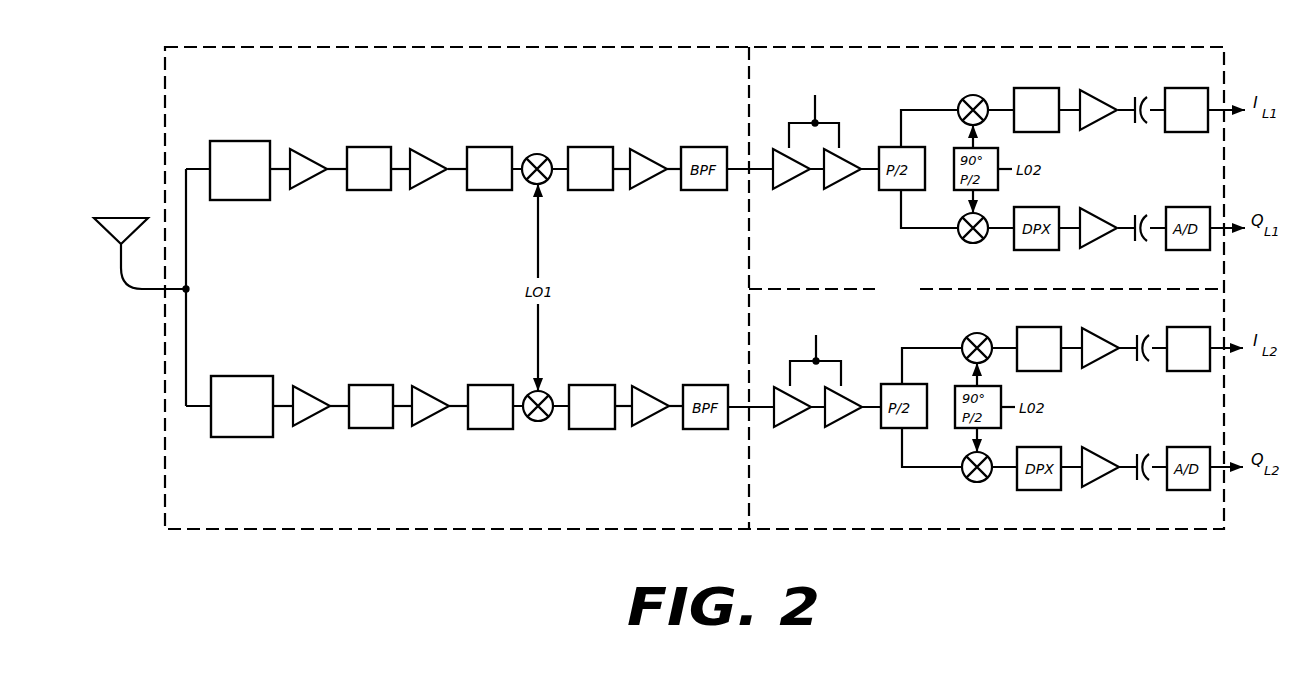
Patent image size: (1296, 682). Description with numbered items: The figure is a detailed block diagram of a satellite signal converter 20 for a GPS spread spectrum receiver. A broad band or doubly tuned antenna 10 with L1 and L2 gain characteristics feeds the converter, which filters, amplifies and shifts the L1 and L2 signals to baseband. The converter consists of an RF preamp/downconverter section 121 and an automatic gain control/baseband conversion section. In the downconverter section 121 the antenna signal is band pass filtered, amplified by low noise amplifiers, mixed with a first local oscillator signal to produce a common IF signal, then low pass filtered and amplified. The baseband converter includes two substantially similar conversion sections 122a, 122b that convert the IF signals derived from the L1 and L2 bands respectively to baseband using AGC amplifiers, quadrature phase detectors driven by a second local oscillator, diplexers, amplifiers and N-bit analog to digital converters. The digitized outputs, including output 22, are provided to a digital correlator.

The satellite signal converter 20 is at (663, 42).
The antenna 10 is at (112, 238).
The digitized output 22 is at (878, 289).
The RF preamp/downconverter section 121 is at (650, 516).
The conversion section 122a is at (835, 280).
The conversion section 122b is at (835, 515).